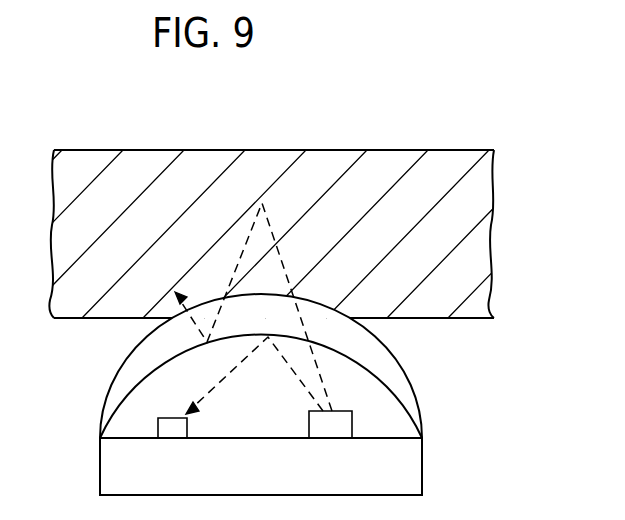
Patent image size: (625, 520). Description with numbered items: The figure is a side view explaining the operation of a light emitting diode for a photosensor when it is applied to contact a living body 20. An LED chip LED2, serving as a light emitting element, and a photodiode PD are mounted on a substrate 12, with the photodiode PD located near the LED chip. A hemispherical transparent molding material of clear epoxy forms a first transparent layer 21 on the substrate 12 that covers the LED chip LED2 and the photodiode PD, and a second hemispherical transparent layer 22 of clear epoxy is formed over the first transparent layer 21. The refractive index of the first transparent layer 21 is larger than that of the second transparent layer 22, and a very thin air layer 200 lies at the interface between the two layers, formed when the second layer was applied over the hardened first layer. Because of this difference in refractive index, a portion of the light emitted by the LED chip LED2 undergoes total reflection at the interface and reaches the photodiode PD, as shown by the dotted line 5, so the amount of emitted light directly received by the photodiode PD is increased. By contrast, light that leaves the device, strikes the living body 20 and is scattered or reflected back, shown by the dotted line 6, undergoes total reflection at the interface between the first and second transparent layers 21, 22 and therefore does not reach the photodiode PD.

The living body 20 is at (472, 238).
The substrate 12 is at (402, 470).
The air layer 200 is at (281, 366).
The second transparent layer 22 is at (372, 350).
The first transparent layer 21 is at (378, 393).
The photodiode PD is at (168, 432).
The LED chip LED2 is at (340, 421).
The dotted line showing light scattered or reflected by the living body 6 is at (253, 307).
The dotted line showing totally reflected light 5 is at (254, 375).